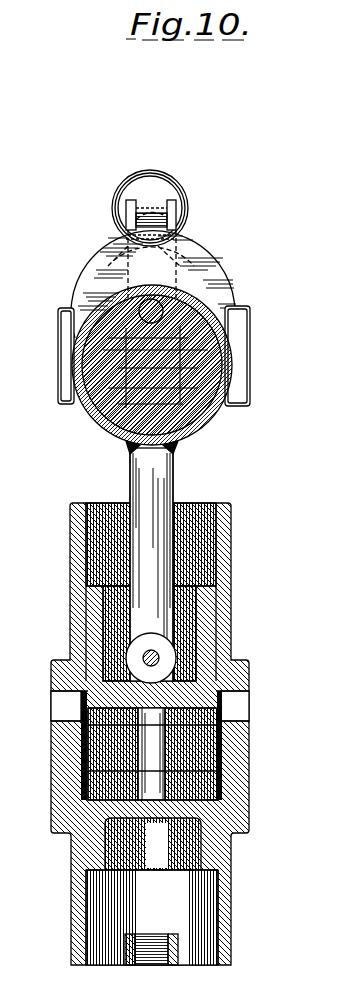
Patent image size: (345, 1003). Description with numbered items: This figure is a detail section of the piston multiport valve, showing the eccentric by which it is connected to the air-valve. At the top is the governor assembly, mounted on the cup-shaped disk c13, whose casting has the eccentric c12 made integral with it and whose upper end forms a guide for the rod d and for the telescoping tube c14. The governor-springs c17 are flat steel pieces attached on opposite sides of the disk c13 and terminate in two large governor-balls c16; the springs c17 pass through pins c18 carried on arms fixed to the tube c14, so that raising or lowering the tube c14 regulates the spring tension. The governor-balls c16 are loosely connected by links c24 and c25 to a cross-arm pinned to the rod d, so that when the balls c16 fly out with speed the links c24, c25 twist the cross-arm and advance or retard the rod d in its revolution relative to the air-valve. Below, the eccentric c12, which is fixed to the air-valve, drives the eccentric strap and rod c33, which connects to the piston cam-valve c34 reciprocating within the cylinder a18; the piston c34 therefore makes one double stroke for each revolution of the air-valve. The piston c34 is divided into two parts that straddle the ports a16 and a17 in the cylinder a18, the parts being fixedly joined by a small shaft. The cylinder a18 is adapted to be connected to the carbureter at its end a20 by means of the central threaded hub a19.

The eccentric c12 is at (222, 372).
The cup-shaped disk c13 is at (170, 284).
The telescoping tube c14 is at (62, 282).
The governor-balls c16 is at (168, 195).
The governor-springs c17 is at (150, 212).
The pins c18 is at (112, 204).
The link c24 is at (195, 242).
The link c25 is at (82, 401).
The eccentric strap and rod c33 is at (132, 475).
The piston cam-valve c34 is at (97, 606).
The port a16 is at (210, 773).
The port a17 is at (203, 738).
The cylinder a18 is at (151, 592).
The central threaded hub a19 is at (120, 954).
The end a20 is at (217, 954).
The rod d is at (88, 303).